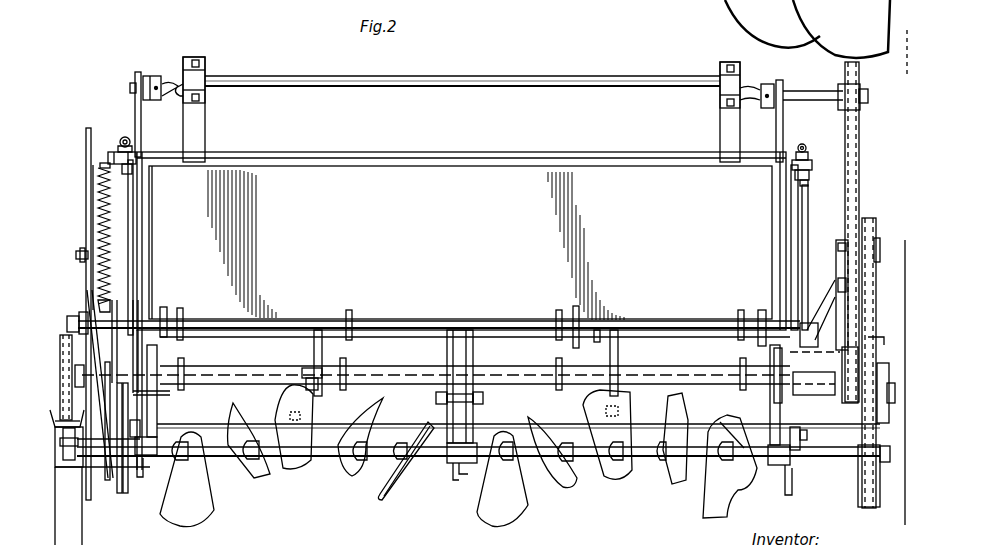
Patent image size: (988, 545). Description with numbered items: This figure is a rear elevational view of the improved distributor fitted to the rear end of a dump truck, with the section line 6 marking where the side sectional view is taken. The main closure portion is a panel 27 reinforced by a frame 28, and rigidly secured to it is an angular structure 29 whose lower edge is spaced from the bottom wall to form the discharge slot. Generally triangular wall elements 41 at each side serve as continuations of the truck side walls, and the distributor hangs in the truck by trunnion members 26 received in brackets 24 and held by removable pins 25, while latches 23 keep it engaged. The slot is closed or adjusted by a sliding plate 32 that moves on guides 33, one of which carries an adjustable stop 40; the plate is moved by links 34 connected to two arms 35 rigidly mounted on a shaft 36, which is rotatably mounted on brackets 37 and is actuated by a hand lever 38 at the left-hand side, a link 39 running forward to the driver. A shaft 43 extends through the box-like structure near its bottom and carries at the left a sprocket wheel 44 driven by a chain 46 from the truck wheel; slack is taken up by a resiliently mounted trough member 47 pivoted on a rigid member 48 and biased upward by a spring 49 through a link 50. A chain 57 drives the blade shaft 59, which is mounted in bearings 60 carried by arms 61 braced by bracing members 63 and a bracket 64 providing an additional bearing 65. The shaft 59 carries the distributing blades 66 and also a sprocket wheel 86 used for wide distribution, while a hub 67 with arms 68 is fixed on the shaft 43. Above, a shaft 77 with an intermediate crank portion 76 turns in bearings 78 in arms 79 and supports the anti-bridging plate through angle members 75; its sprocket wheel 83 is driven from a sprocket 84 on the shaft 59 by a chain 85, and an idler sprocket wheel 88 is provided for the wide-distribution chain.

The section line 6- 6 is at (440, 195).
The latch 23 is at (123, 468).
The bracket 24 is at (110, 140).
The removable pin 25 is at (124, 138).
The trunnion member 26 is at (110, 158).
The panel 27 is at (452, 243).
The frame 28 is at (222, 166).
The angular structure 29 is at (274, 362).
The sliding plate 32 is at (334, 458).
The guide 33 is at (318, 332).
The link 34 is at (186, 368).
The arm 35 is at (196, 324).
The shaft 36 is at (430, 322).
The bracket 37 is at (164, 310).
The hand lever 38 is at (86, 207).
The link 39 is at (76, 256).
The stop 40 is at (340, 366).
The triangular wall element 41 is at (134, 247).
The shaft 43 is at (62, 372).
The sprocket wheel 44 is at (68, 330).
The chain 46 is at (62, 414).
The resiliently mounted member 47 is at (72, 536).
The rigid member 48 is at (94, 482).
The spring 49 is at (98, 225).
The link 50 is at (94, 362).
The chain 57 is at (860, 496).
The shaft 59 is at (528, 462).
The bearing 60 is at (150, 438).
The arm 61 is at (136, 486).
The bracing member 63 is at (772, 398).
The bracket 64 is at (448, 416).
The bearing 65 is at (446, 470).
The distributing blade 66 is at (268, 478).
The hub 67 is at (882, 396).
The arm 68 is at (884, 340).
The angle member 75 is at (205, 124).
The intermediate crank portion 76 is at (558, 78).
The shaft 77 is at (813, 92).
The bearing 78 is at (147, 76).
The arm 79 is at (141, 125).
The sprocket wheel 83 is at (862, 88).
The sprocket 84 is at (852, 402).
The chain 85 is at (858, 180).
The sprocket wheel 86 is at (72, 470).
The idler sprocket wheel 88 is at (870, 222).